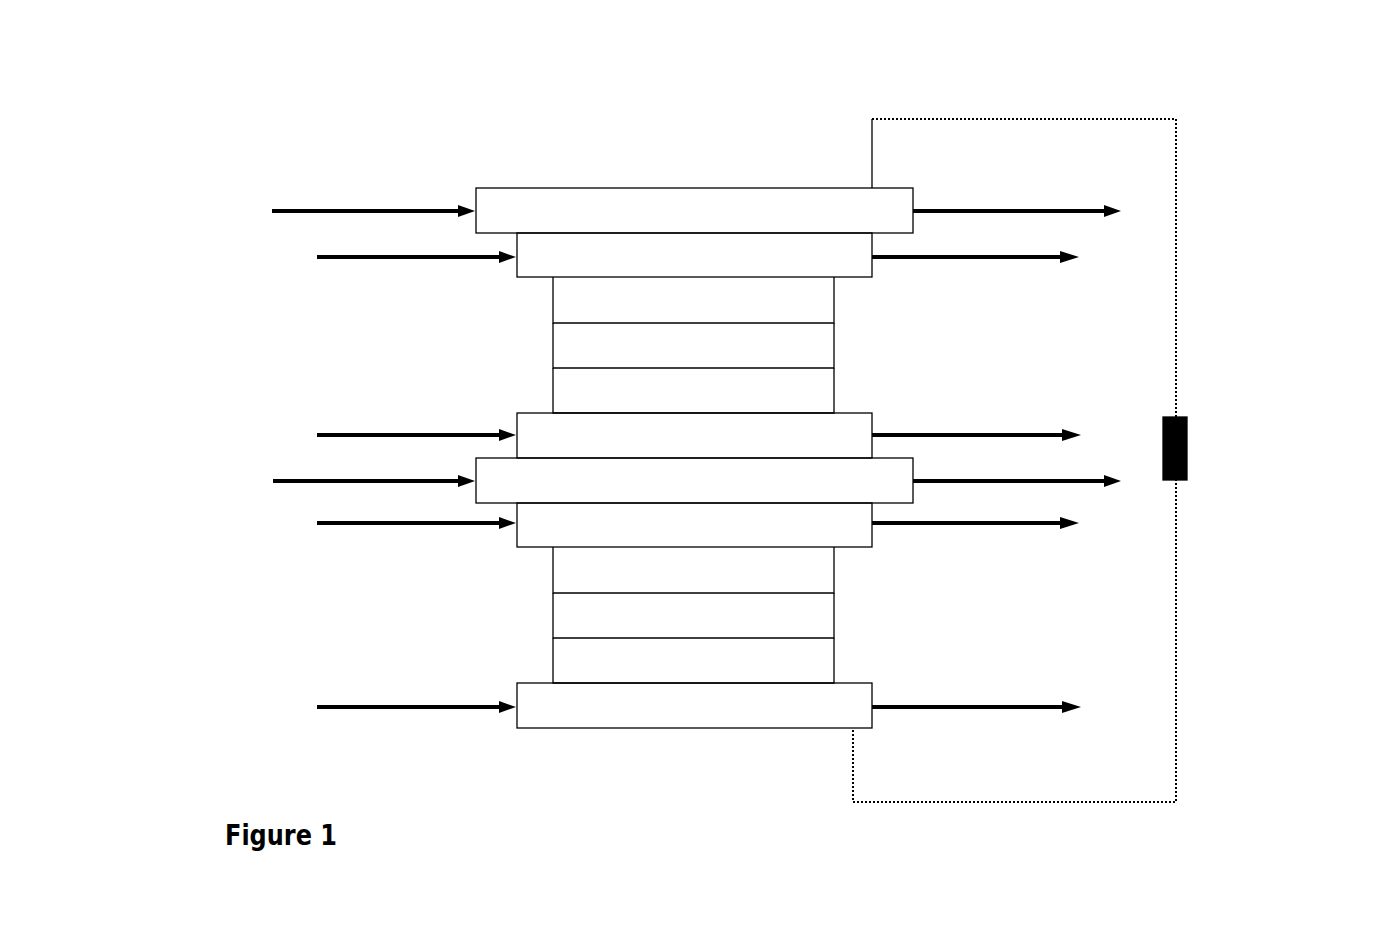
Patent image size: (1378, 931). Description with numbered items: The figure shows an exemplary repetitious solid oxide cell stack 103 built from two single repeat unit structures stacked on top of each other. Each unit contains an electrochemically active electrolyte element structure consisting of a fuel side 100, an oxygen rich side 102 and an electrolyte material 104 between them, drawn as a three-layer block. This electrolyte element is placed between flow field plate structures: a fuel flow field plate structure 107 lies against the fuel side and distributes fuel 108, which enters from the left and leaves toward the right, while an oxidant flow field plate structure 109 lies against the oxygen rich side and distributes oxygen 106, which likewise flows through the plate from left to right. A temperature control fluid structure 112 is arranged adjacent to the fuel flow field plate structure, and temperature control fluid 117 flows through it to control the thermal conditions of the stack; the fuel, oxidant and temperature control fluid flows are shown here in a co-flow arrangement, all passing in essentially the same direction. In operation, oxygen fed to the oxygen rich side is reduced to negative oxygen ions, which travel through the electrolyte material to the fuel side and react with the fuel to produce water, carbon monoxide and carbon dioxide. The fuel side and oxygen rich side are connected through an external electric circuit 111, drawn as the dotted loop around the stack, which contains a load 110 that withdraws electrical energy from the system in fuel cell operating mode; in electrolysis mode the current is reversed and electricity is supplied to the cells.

The repetitious stack 103 is at (547, 142).
The fuel side 100 is at (823, 302).
The electrolyte material 104 is at (827, 342).
The oxygen rich side 102 is at (823, 389).
The temperature control fluid structure 112 is at (694, 345).
The fuel flow field plate structure 107 is at (694, 390).
The oxidant flow field plate structure 109 is at (694, 570).
The temperature control fluid 117 is at (293, 209).
The fuel 108 is at (322, 258).
The oxygen 106 is at (403, 434).
The external electric circuit 111 is at (1195, 332).
The load 110 is at (1187, 450).